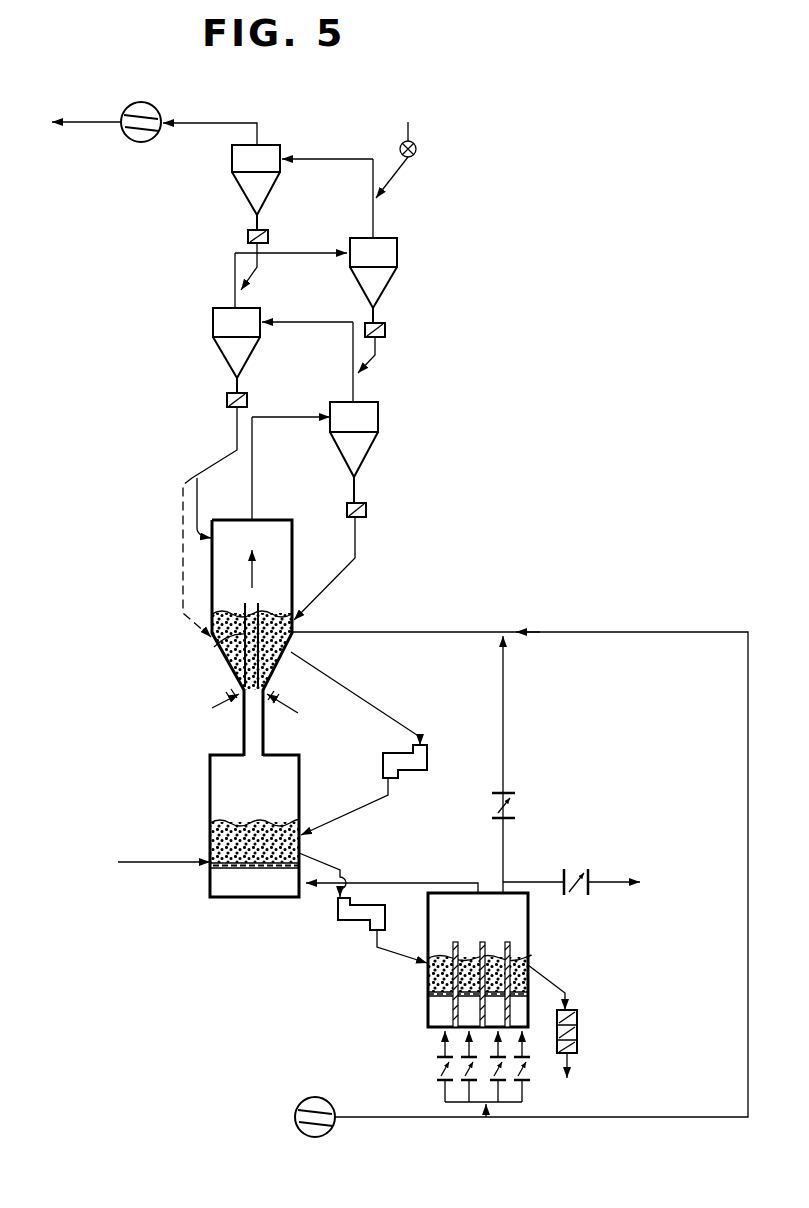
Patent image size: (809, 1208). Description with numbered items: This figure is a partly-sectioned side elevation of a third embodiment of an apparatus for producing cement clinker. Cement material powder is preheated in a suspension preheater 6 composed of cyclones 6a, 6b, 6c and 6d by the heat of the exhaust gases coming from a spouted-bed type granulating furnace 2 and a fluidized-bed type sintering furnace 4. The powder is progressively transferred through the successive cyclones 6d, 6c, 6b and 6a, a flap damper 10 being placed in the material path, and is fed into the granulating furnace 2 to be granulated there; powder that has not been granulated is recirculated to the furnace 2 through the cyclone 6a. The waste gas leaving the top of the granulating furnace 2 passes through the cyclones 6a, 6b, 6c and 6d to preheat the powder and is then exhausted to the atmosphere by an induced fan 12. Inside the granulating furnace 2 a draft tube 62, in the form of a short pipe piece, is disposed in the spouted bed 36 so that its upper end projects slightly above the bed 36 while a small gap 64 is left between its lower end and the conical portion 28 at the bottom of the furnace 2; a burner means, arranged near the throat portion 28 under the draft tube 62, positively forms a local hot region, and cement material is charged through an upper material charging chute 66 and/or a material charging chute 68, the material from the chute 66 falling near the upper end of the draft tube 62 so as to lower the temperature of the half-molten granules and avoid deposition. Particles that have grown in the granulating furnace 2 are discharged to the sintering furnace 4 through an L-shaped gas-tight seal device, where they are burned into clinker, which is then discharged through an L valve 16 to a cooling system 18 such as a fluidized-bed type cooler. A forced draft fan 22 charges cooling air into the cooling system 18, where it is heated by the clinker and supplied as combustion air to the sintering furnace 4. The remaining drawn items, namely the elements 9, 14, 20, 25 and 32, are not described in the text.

The spouted-bed type granulating furnace 2 is at (292, 543).
The fluidized-bed type sintering furnace 4 is at (210, 794).
The suspension preheater 6 is at (210, 292).
The cyclone 6a is at (379, 414).
The cyclone 6b is at (213, 328).
The cyclone 6c is at (398, 250).
The cyclone 6d is at (272, 143).
The rotary valve 9 is at (367, 509).
The flap damper 10 is at (227, 399).
The induced fan 12 is at (141, 142).
The solids transfer conduit 14 is at (430, 756).
The L valve 16 is at (347, 931).
The cooling system 18 is at (428, 989).
The discharge valve 20 is at (578, 1027).
The forced draft fan 22 is at (315, 1097).
The recirculation gas line 25 is at (427, 632).
The conical portion (throat portion) 28 is at (284, 668).
The nozzle 32 is at (267, 689).
The spouted bed 36 is at (237, 657).
The draft tube 62 is at (214, 646).
The small gap 64 is at (232, 686).
The material charging chute 66 is at (197, 507).
The material charging chute 68 is at (183, 508).